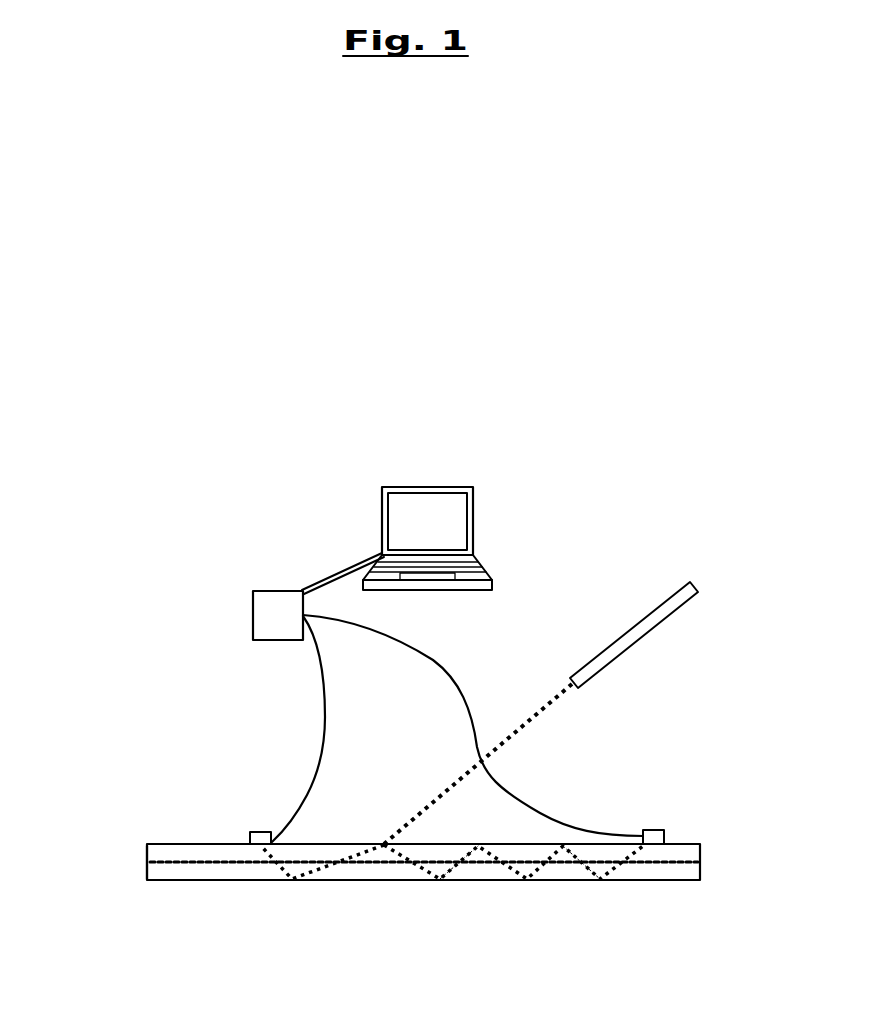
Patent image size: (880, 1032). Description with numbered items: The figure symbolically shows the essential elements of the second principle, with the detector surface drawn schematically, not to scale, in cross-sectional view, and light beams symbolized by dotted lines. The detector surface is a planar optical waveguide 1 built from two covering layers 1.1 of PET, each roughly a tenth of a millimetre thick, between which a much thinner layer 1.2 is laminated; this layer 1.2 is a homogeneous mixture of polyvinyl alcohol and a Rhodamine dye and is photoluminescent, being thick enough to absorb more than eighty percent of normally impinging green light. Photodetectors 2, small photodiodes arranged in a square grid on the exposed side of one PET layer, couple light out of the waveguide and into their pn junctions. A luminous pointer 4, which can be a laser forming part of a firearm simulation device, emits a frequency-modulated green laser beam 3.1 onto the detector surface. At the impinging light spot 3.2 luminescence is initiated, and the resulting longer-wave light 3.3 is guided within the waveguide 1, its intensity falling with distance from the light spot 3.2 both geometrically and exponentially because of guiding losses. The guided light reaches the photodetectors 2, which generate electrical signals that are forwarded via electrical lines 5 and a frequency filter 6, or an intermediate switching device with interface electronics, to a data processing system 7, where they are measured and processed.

The planar optical waveguide 1 is at (622, 890).
The covering layers 1.1 is at (157, 856).
The photoluminescent layer 1.2 is at (700, 855).
The photodetectors 2 is at (250, 832).
The laser beam 3.1 is at (538, 720).
The light spot 3.2 is at (363, 862).
The light generated by photoluminescence 3.3 is at (515, 873).
The luminous pointer 4 is at (675, 592).
The electrical lines 5 is at (318, 768).
The frequency filter 6 is at (267, 615).
The data processing system 7 is at (387, 502).